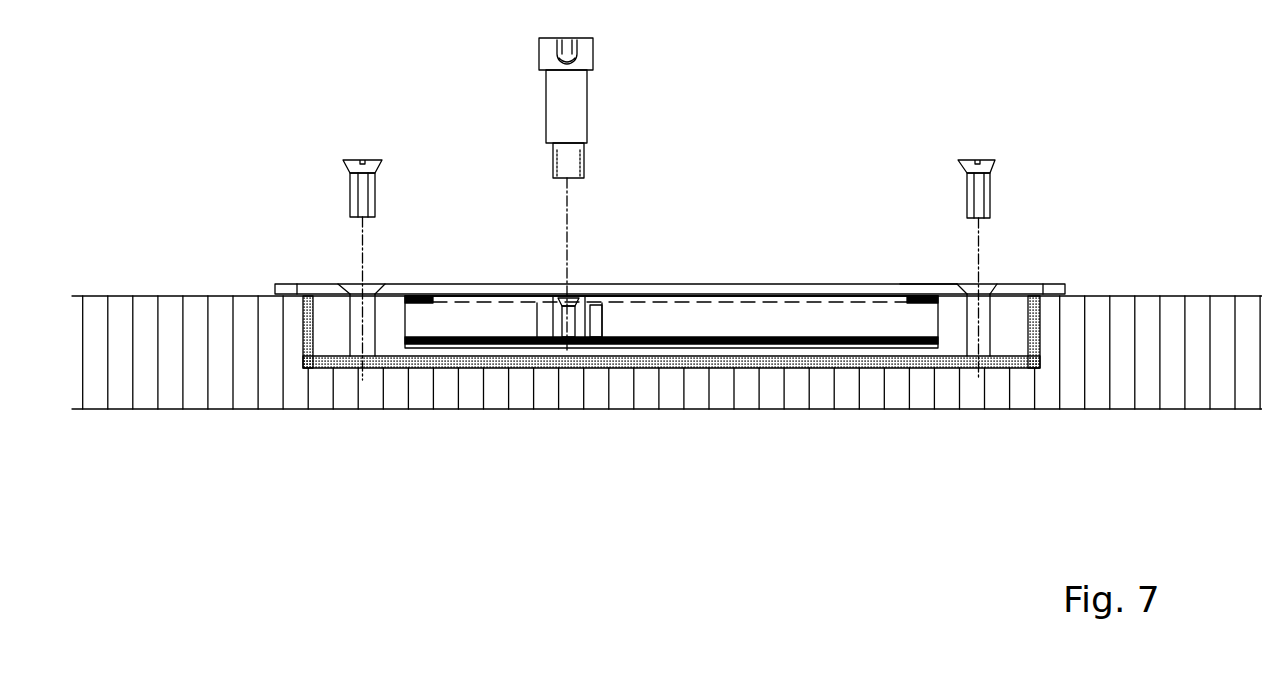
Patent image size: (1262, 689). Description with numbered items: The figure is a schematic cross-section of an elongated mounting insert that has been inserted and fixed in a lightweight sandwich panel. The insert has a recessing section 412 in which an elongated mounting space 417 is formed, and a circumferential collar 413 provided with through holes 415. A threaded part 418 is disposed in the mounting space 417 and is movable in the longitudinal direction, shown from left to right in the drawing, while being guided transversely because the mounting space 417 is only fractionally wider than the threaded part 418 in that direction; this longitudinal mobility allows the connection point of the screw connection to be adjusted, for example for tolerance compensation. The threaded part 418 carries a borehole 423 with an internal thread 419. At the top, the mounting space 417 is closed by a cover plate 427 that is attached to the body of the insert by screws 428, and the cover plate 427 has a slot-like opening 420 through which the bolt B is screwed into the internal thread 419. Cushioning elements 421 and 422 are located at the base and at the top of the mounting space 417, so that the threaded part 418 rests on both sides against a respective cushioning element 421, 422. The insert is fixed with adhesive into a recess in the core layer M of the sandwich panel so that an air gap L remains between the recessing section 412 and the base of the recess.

The recessing section 412 is at (330, 338).
The circumferential collar 413 is at (332, 290).
The through holes 415 is at (292, 293).
The mounting space 417 is at (798, 318).
The threaded part 418 is at (598, 320).
The internal thread 419 is at (558, 296).
The slot-like opening 420 is at (685, 296).
The cushioning element 421 is at (695, 340).
The cushioning element 422 is at (420, 296).
The borehole 423 is at (568, 300).
The cover plate 427 is at (927, 284).
The screws 428 is at (358, 185).
The bolt B is at (555, 106).
The air gap L is at (745, 358).
The core layer M is at (1172, 307).